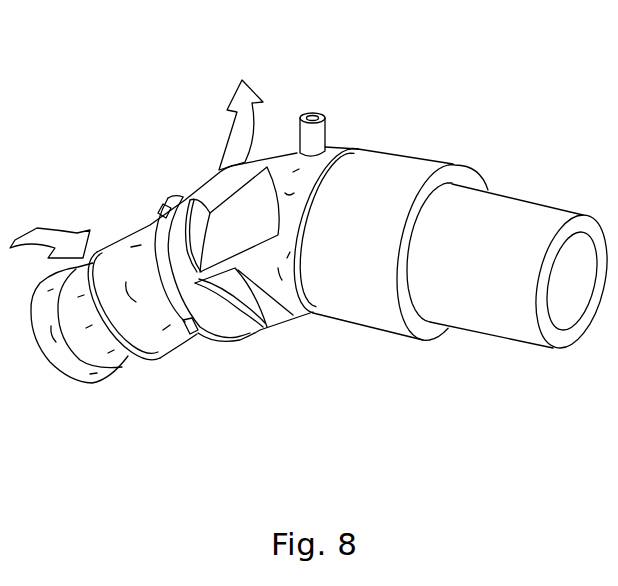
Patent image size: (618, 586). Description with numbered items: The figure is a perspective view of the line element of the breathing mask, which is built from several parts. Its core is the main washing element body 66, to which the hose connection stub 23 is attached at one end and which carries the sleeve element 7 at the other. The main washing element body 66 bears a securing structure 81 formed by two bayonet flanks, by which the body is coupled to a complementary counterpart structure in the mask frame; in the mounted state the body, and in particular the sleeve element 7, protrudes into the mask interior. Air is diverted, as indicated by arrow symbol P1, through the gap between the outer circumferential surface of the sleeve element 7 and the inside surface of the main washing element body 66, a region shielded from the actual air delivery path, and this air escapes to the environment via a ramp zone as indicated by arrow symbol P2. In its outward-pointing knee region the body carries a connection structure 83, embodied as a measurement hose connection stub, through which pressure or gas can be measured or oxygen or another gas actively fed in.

The sleeve element 7 is at (127, 357).
The hose connection stub 23 is at (407, 170).
The main washing element body 66 is at (177, 159).
The securing structure 81 is at (219, 346).
The connection structure 83 is at (327, 100).
The arrow symbol P1 is at (50, 236).
The arrow symbol P2 is at (262, 97).